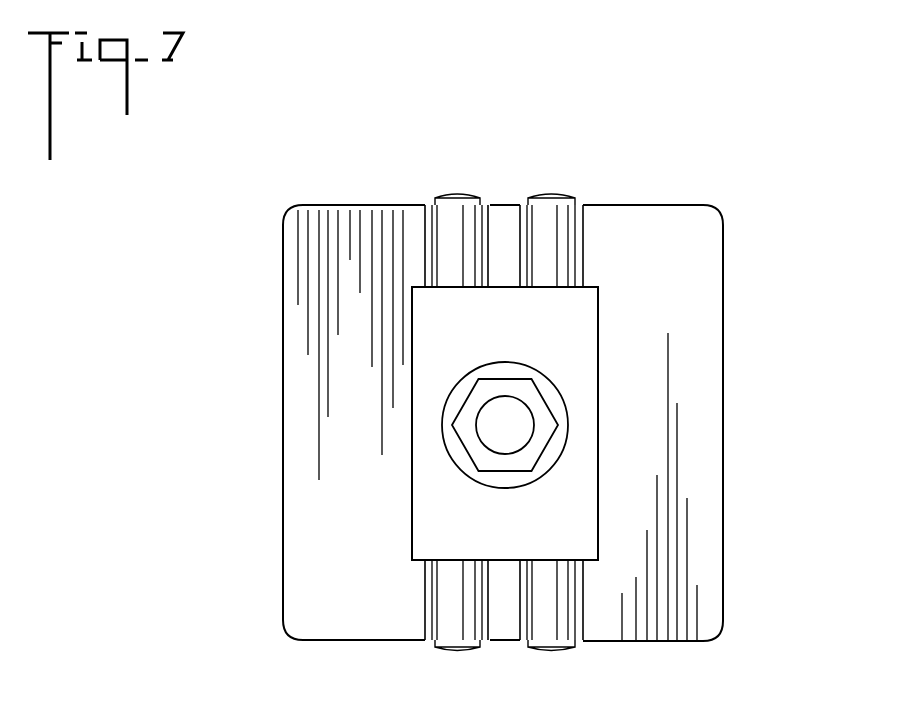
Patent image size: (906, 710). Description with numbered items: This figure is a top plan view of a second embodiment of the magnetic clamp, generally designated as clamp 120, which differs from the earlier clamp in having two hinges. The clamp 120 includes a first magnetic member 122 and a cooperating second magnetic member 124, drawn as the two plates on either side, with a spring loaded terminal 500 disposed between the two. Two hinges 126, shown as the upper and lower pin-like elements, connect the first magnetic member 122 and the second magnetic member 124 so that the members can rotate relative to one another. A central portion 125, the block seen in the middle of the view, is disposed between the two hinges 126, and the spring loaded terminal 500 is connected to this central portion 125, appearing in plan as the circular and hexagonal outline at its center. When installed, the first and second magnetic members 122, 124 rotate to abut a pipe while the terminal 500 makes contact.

The magnetic clamp 120 is at (753, 165).
The first magnetic member 122 is at (400, 640).
The second magnetic member 124 is at (606, 641).
The central portion 125 is at (572, 383).
The hinges 126 is at (450, 227).
The spring loaded terminal 500 is at (537, 358).